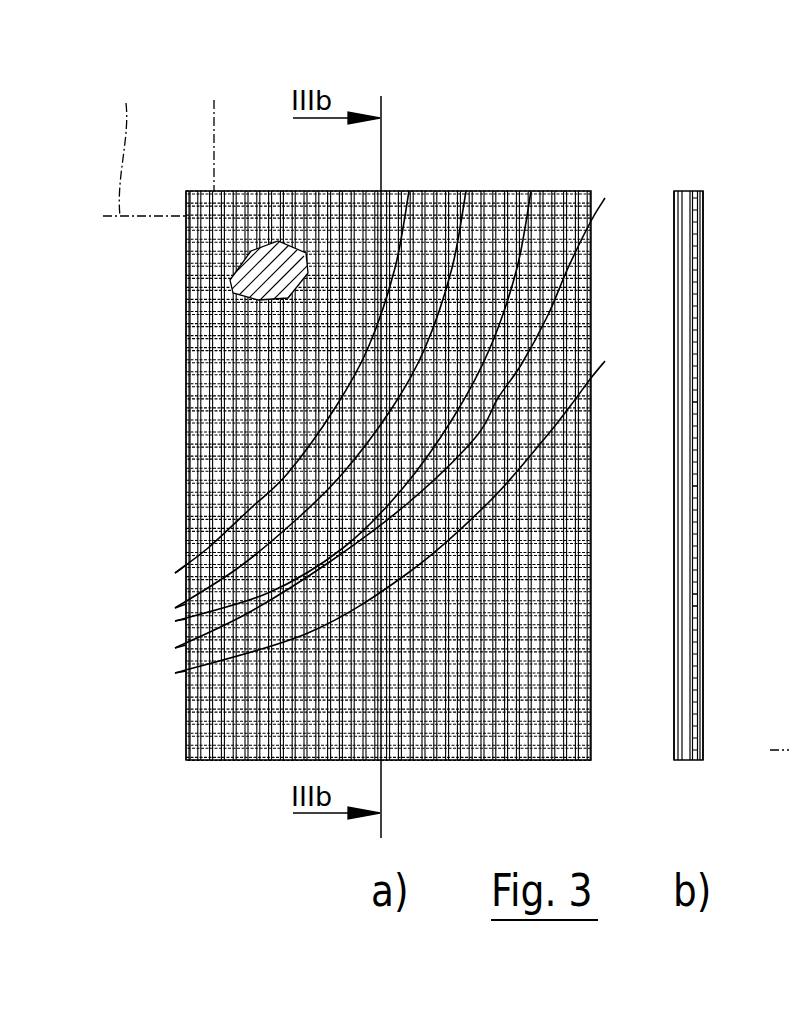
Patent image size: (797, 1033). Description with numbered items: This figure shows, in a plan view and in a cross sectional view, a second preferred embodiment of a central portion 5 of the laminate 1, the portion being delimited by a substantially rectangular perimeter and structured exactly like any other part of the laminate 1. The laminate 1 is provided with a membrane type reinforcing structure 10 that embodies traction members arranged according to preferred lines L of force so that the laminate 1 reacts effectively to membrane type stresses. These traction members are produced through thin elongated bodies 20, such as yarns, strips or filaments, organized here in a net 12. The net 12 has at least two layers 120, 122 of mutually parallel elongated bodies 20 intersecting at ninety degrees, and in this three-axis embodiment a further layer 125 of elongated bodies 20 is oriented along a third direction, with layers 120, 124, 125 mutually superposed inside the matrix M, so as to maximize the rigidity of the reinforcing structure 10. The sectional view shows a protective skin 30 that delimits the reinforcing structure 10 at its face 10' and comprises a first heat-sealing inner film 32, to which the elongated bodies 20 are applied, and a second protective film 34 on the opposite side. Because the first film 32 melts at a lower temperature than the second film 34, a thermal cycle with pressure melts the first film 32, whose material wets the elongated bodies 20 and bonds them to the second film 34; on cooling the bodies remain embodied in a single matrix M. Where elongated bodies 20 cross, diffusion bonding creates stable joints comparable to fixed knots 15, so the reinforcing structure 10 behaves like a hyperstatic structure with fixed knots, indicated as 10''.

The laminate 1 is at (244, 142).
The central portion 5 is at (160, 381).
The reinforcing structure 10 is at (390, 400).
The face 10' is at (642, 475).
The reinforcing structure with fixed knots 10'' is at (746, 475).
The net 12 is at (425, 753).
The knot 15 is at (714, 467).
The elongated body 20 is at (218, 275).
The protective skin 30 is at (690, 780).
The first heat-sealing inner film 32 is at (677, 577).
The second protective film 34 is at (669, 670).
The first layer of elongated bodies 120 is at (683, 183).
The second layer of elongated bodies 122 is at (690, 183).
The layer of elongated bodies 124 is at (178, 740).
The further layer of elongated bodies 125 is at (190, 247).
The matrix M is at (713, 602).
The lines of force L is at (206, 105).